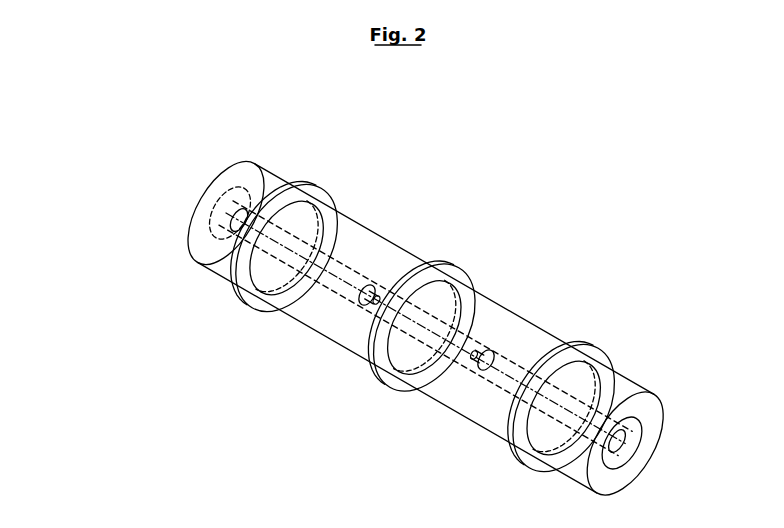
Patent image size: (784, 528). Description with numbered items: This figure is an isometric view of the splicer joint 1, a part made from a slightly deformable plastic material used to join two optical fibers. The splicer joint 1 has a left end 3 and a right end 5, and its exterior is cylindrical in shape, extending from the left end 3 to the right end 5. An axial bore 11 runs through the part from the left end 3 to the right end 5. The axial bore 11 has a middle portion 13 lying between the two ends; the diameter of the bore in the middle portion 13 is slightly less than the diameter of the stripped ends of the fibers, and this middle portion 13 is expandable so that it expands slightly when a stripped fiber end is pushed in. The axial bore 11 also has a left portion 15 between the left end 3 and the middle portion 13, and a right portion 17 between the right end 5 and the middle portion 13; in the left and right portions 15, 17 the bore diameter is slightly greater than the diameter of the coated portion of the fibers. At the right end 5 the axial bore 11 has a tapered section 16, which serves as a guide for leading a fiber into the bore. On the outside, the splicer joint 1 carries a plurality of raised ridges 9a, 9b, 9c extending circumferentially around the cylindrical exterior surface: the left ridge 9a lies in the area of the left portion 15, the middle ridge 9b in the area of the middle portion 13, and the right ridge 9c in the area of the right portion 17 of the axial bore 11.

The splicer joint 1 is at (426, 305).
The left end 3 is at (225, 191).
The right end 5 is at (659, 426).
The left ridge 9a is at (309, 234).
The middle ridge 9b is at (448, 315).
The right ridge 9c is at (585, 395).
The axial bore 11 is at (149, 196).
The middle portion 13 is at (358, 345).
The left portion 15 is at (239, 258).
The tapered section 16 is at (660, 464).
The right portion 17 is at (436, 404).